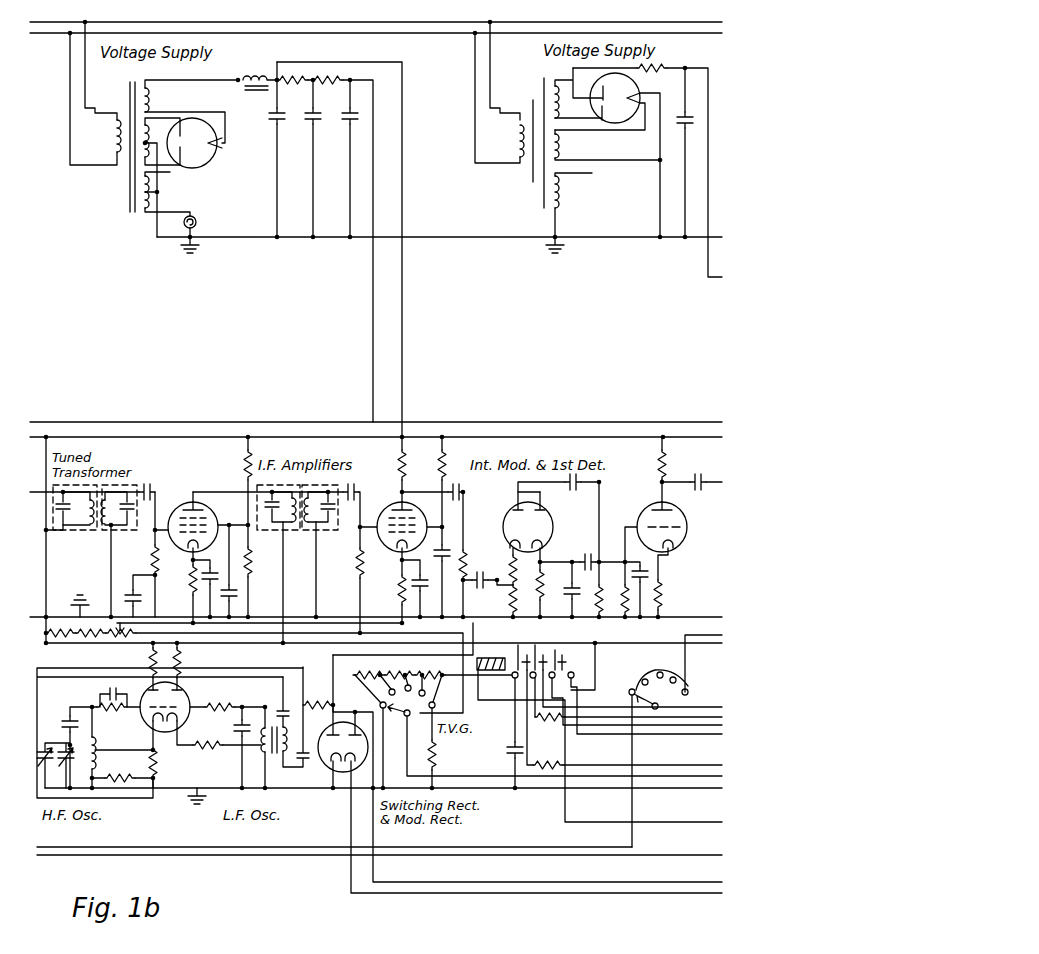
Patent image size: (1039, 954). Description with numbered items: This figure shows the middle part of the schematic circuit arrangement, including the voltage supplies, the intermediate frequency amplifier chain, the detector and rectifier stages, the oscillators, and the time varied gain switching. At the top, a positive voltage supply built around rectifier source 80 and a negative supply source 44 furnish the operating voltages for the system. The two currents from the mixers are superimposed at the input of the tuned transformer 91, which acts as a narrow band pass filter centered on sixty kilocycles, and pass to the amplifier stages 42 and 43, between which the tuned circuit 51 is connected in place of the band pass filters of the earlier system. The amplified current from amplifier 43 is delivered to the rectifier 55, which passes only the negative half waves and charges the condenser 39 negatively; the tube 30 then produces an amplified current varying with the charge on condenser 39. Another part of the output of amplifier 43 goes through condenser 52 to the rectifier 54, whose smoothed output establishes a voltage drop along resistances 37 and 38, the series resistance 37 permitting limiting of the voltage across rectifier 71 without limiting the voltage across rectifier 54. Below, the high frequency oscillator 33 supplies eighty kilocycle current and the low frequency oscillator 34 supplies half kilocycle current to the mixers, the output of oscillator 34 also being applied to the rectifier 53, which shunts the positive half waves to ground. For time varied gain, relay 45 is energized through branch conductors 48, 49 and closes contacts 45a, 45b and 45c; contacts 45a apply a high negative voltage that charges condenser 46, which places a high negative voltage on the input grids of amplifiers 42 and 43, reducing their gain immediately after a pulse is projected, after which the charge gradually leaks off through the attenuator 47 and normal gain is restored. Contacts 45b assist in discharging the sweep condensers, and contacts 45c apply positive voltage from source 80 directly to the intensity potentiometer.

The source 80 is at (235, 191).
The supply source 44 is at (627, 198).
The tuned transformer 91 is at (104, 486).
The amplifier 42 is at (187, 504).
The tuned circuit 51 is at (308, 530).
The amplifier 43 is at (392, 504).
The rectifier 54 is at (528, 522).
The rectifier 55 is at (538, 520).
The condenser 52 is at (472, 578).
The series resistance 37 is at (523, 566).
The resistance 38 is at (523, 601).
The condenser 39 is at (587, 558).
The tube 30 is at (648, 504).
The oscillator 33 is at (118, 730).
The oscillator 34 is at (215, 730).
The rectifier 53 is at (343, 738).
The rectifier 71 is at (355, 736).
The attenuator 47 is at (432, 693).
The relay 45 is at (503, 659).
The contacts 45a is at (516, 647).
The contacts 45b is at (539, 653).
The contacts 45c is at (589, 647).
The condenser 46 is at (513, 746).
The branch conductor 48 is at (176, 846).
The branch conductor 49 is at (224, 854).